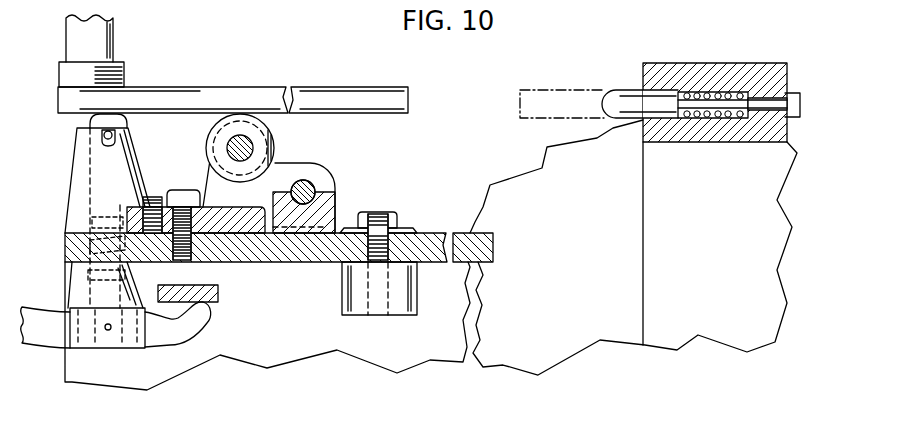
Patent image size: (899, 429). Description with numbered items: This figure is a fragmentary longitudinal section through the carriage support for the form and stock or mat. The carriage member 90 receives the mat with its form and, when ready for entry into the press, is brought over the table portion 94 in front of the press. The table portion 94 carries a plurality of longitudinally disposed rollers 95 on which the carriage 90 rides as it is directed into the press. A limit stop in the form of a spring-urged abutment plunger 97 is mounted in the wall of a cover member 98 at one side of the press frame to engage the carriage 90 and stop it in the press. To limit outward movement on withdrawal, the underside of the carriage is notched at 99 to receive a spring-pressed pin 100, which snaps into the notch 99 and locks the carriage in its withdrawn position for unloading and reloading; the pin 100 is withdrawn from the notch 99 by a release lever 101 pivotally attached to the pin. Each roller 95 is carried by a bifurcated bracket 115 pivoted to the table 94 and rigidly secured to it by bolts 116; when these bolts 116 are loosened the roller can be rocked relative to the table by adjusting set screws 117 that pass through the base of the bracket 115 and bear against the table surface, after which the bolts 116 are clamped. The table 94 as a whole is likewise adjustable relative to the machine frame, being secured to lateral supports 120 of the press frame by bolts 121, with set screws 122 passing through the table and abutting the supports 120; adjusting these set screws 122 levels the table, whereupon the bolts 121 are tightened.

The carriage member 90 is at (333, 95).
The table portion 94 is at (305, 259).
The rollers 95 is at (276, 141).
The spring-urged abutment plunger 97 is at (625, 98).
The cover member 98 is at (721, 204).
The notch 99 is at (103, 112).
The spring-pressed pin 100 is at (88, 163).
The release lever 101 is at (50, 335).
The bifurcated bracket 115 is at (303, 170).
The bolts 116 is at (183, 197).
The set screws 117 is at (157, 197).
The lateral supports 120 is at (347, 295).
The bolts 121 is at (392, 213).
The set screws 122 is at (394, 224).